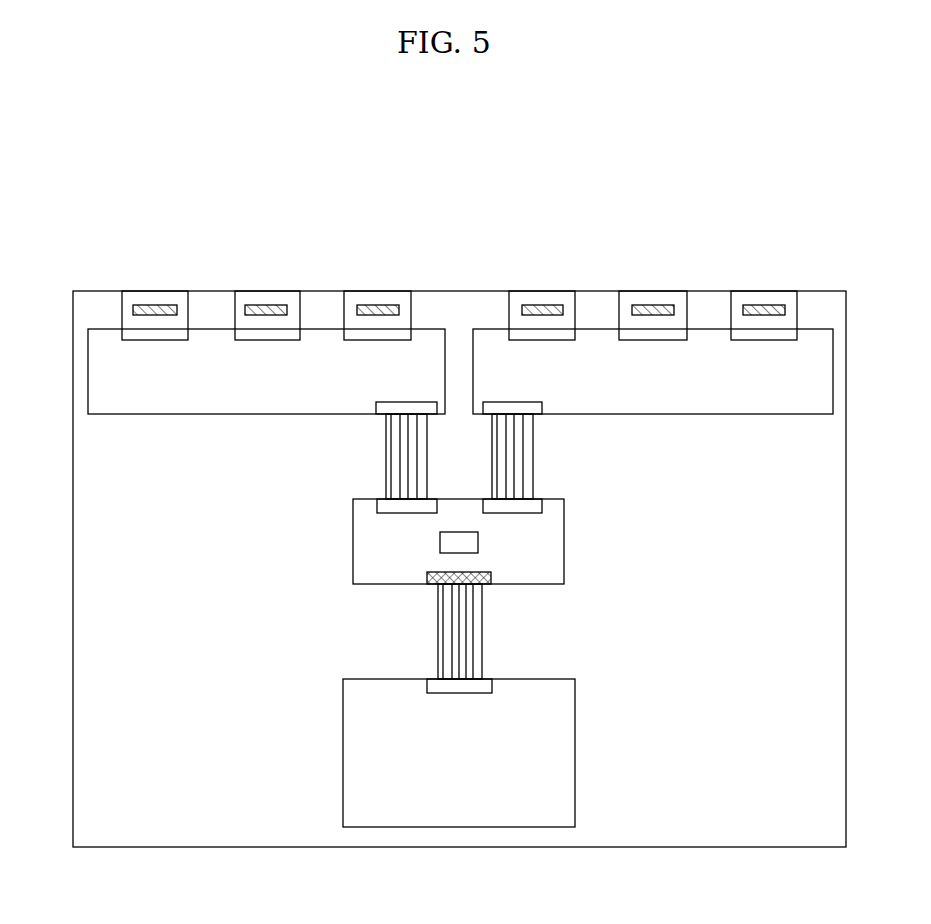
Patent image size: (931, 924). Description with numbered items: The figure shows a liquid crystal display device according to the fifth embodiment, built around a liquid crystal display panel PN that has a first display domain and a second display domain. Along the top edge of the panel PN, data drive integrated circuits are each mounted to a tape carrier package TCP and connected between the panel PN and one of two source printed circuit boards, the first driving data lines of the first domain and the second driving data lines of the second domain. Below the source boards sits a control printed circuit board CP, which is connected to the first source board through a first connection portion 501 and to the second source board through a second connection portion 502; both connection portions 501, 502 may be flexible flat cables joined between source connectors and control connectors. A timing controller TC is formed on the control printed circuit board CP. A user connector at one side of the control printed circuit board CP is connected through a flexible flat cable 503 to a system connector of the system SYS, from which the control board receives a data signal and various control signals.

The liquid crystal display panel PN is at (816, 291).
The tape carrier package TCP is at (122, 302).
The first connection portion 501 is at (386, 455).
The second connection portion 502 is at (533, 457).
The control printed circuit board CP is at (564, 567).
The timing controller TC is at (478, 540).
The flexible flat cable 503 is at (482, 630).
The system SYS is at (575, 753).